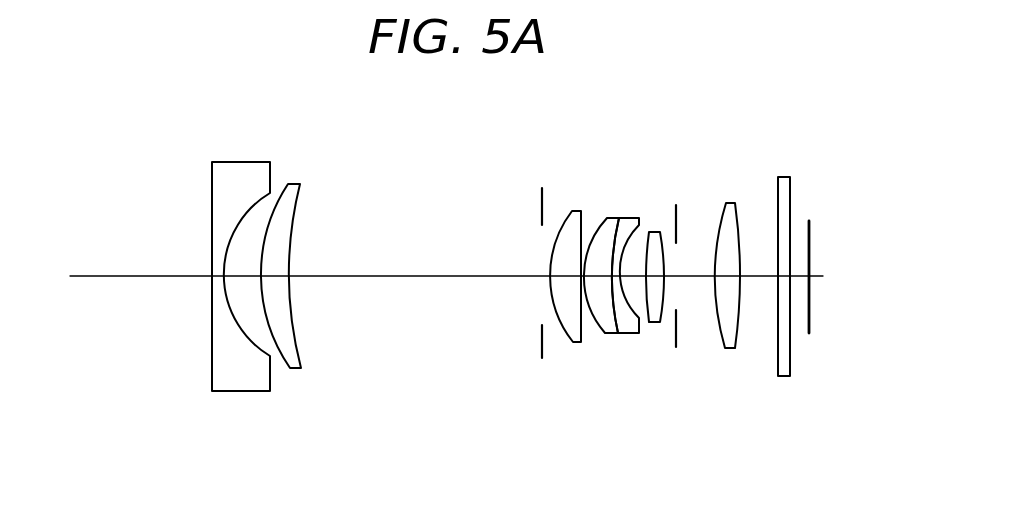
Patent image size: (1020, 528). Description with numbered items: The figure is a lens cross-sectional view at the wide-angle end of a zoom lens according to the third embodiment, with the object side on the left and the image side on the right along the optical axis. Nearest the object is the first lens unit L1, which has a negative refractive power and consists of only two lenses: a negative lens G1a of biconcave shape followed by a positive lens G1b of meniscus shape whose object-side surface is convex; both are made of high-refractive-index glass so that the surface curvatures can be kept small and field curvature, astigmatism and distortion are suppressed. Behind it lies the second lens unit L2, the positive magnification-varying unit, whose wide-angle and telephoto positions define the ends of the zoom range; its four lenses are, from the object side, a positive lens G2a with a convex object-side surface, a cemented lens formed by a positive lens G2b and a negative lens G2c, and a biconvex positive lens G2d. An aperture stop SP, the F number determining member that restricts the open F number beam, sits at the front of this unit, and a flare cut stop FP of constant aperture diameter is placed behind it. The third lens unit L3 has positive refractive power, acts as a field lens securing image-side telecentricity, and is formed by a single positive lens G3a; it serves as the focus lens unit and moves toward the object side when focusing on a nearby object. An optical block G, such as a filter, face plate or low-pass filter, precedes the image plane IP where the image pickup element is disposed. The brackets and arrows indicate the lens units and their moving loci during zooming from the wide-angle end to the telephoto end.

The first lens unit L1 is at (220, 468).
The second lens unit L2 is at (560, 428).
The third lens unit L3 is at (745, 432).
The negative lens G1a is at (222, 192).
The positive lens G1b is at (287, 225).
The aperture stop SP is at (540, 205).
The positive lens G2a is at (575, 207).
The positive lens G2b is at (605, 217).
The negative lens G2c is at (633, 217).
The positive lens G2d is at (652, 228).
The flare cut stop FP is at (682, 220).
The positive lens G3a is at (730, 203).
The optical block G is at (787, 178).
The image plane IP is at (810, 230).